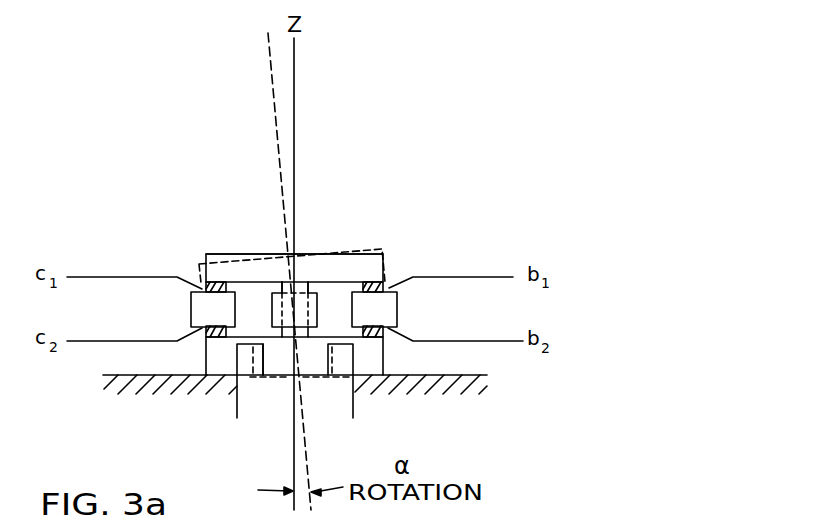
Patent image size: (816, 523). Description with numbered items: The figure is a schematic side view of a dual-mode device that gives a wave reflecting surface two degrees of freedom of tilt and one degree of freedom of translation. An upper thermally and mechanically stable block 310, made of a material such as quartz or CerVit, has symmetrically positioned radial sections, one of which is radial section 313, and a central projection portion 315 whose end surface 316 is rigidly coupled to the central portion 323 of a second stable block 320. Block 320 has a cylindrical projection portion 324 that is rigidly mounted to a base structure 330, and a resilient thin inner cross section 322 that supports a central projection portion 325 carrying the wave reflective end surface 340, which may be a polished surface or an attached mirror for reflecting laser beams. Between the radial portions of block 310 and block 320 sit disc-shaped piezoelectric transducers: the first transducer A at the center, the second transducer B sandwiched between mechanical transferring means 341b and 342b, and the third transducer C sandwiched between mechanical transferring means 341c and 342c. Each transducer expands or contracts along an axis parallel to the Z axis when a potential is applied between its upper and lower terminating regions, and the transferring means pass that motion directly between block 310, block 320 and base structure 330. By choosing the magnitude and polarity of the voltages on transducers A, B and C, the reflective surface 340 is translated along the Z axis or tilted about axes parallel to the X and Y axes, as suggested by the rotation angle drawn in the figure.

The thermally and mechanically stable block 310 is at (219, 254).
The radial section 313 is at (235, 267).
The central projection portion 315 is at (300, 310).
The end surface 316 is at (303, 306).
The second thermally and mechanically stable block 320 is at (389, 358).
The resilient thin inner cross section 322 is at (235, 388).
The central portion 323 is at (304, 340).
The cylindrical projection portion 324 is at (368, 360).
The central projection portion 325 is at (276, 360).
The base structure 330 is at (152, 387).
The wave reflective end surface 340 is at (290, 377).
The mechanical transferring means 341b is at (389, 288).
The mechanical transferring means 341c is at (202, 288).
The mechanical transferring means 342b is at (392, 338).
The mechanical transferring means 342c is at (202, 333).
The first transducer A is at (270, 308).
The second transducer B is at (397, 308).
The third transducer C is at (191, 308).